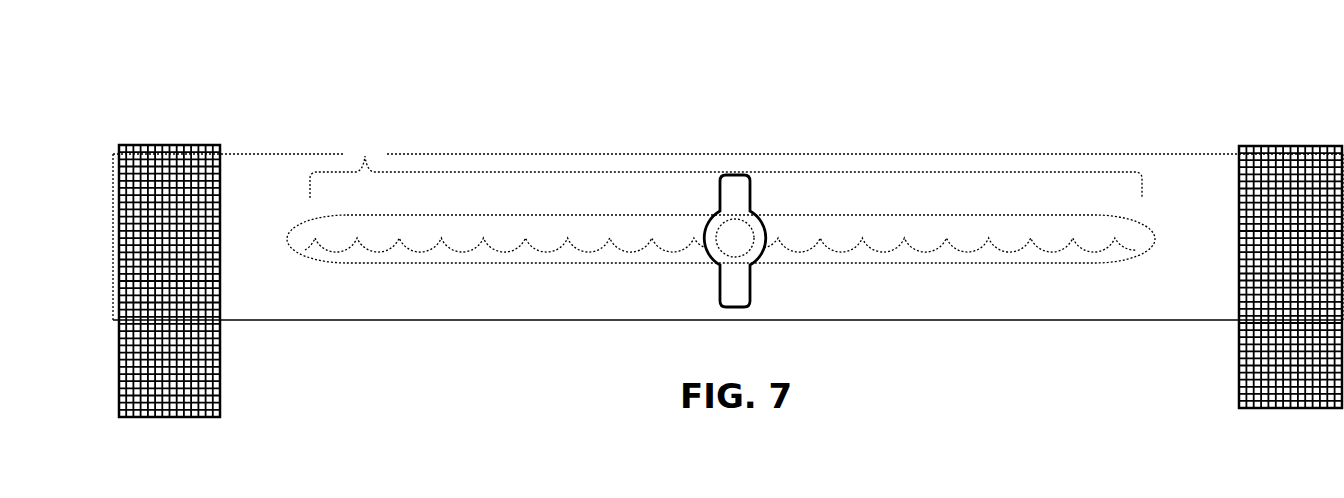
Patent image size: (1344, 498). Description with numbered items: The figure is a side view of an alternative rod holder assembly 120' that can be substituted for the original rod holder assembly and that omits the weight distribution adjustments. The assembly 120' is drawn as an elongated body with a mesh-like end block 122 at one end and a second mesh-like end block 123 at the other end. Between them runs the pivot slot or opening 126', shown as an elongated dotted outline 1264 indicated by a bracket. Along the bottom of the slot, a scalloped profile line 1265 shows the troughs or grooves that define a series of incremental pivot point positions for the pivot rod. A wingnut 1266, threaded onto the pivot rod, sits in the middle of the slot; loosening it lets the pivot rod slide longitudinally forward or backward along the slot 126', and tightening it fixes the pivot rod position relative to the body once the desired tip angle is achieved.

The rod holder assembly 120' is at (728, 164).
The first mesh screen 122 is at (158, 418).
The second mesh screen 123 is at (1297, 411).
The pivot slot or opening 126' is at (726, 164).
The strip body outline 1264 is at (413, 213).
The profile line 1265 is at (497, 248).
The wingnut 1266 is at (719, 295).